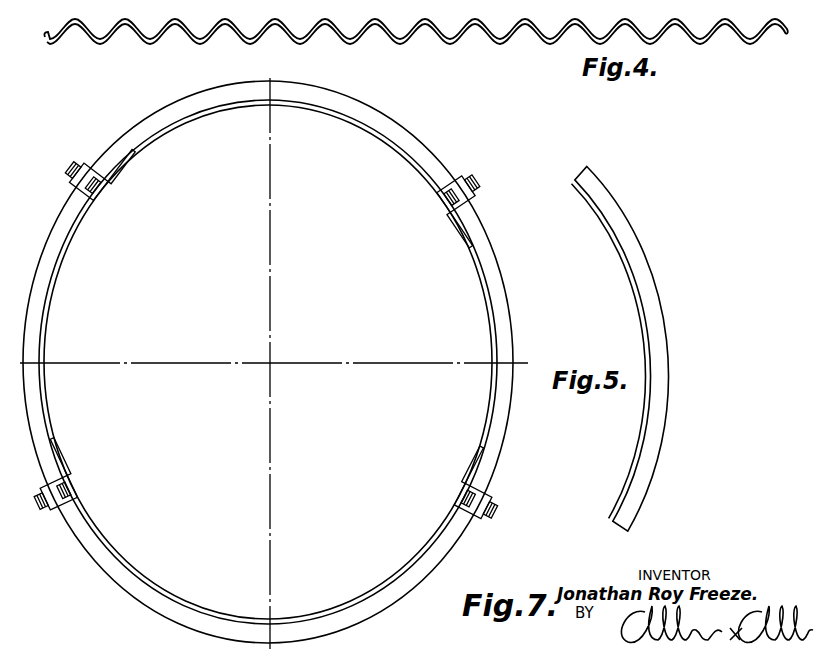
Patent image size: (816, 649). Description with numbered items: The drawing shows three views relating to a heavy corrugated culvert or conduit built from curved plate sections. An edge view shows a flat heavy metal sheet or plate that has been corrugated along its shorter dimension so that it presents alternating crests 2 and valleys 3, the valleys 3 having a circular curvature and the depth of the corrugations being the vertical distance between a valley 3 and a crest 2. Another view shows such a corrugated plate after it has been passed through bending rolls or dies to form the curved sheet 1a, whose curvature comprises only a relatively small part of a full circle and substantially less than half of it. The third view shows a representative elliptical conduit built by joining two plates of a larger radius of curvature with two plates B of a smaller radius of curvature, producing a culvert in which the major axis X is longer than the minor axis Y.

In FIG. 7, the curved sheet 1a is at (492, 375).
In FIG. 5, the curved sheet 1a is at (581, 197).
In FIG. 4, the crests 2 is at (423, 20).
In FIG. 4, the valleys 3 is at (462, 43).
In FIG. 7, the plates having a radius of 30 inches B is at (328, 107).
In FIG. 7, the major axis X is at (272, 200).
In FIG. 7, the minor axis Y is at (326, 363).